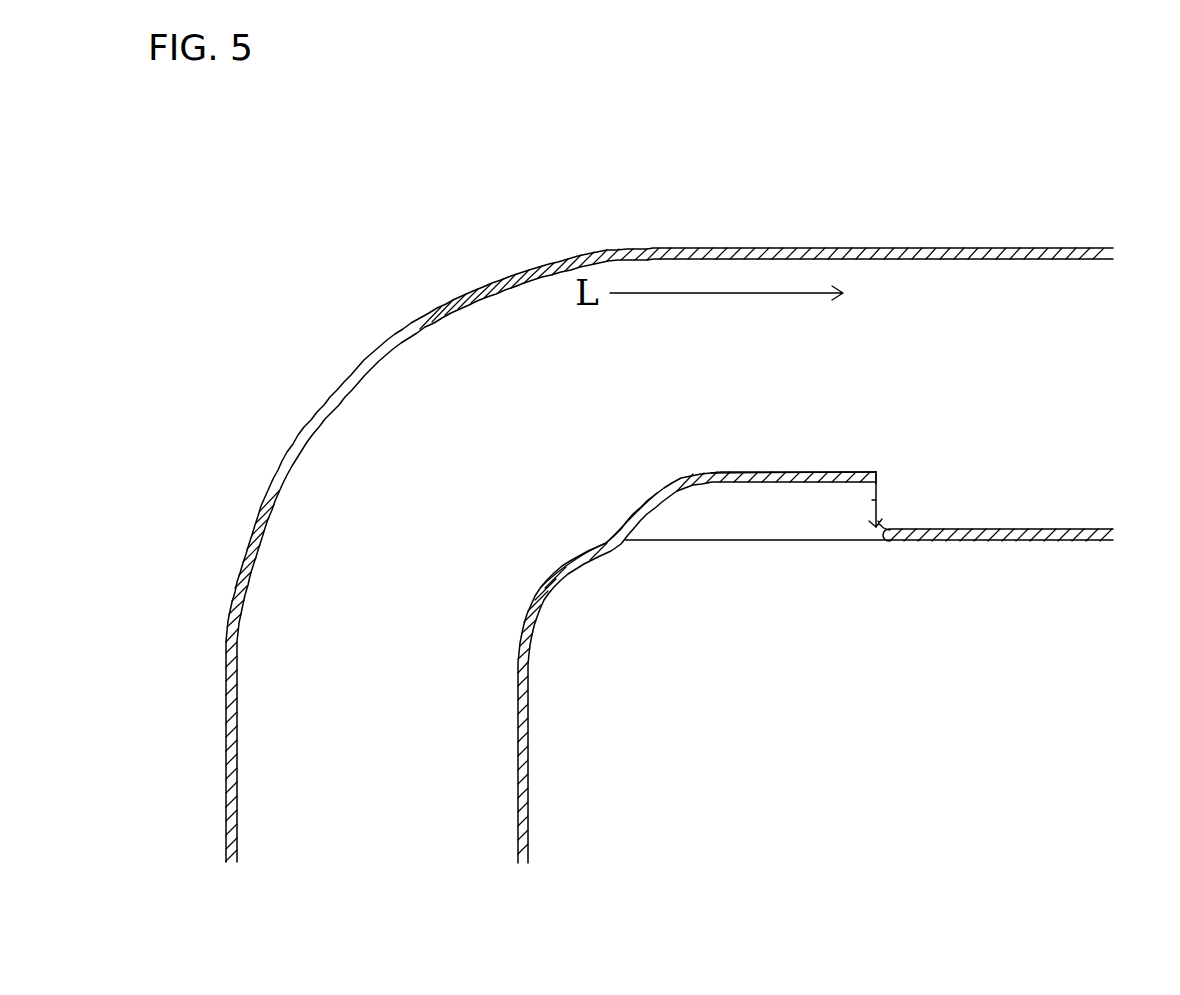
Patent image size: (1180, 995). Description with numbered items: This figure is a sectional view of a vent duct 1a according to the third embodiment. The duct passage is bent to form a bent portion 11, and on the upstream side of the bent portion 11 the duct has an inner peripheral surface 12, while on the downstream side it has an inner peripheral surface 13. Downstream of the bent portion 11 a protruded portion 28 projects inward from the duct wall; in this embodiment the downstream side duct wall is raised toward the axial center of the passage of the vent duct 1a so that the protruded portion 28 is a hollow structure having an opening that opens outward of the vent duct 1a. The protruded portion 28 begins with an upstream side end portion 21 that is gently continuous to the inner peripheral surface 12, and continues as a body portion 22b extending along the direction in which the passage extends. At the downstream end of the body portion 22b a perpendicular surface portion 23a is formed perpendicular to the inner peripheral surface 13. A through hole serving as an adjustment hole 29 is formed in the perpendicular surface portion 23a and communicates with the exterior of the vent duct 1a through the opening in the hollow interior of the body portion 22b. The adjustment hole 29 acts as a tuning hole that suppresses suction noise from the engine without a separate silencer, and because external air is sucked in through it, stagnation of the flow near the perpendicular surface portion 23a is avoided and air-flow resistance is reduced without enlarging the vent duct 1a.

The vent duct 1a is at (986, 188).
The bent portion 11 is at (425, 393).
The inner peripheral surface 12 is at (520, 677).
The inner peripheral surface 13 is at (1092, 528).
The upstream side end portion 21 is at (663, 494).
The body portion 22b is at (777, 480).
The protruded portion 28 is at (843, 463).
The perpendicular surface portion 23a is at (877, 474).
The adjustment hole 29 is at (876, 525).